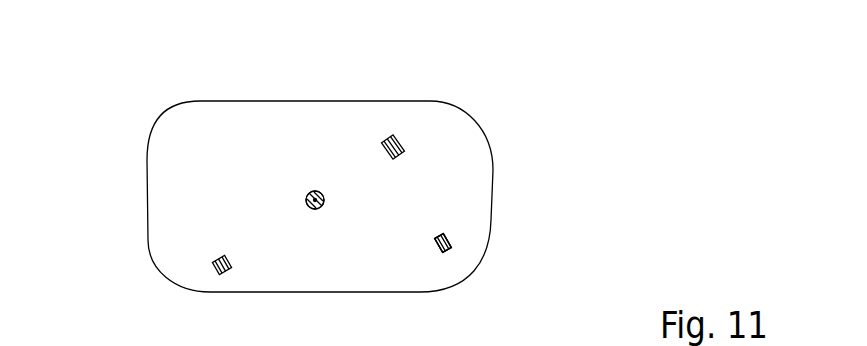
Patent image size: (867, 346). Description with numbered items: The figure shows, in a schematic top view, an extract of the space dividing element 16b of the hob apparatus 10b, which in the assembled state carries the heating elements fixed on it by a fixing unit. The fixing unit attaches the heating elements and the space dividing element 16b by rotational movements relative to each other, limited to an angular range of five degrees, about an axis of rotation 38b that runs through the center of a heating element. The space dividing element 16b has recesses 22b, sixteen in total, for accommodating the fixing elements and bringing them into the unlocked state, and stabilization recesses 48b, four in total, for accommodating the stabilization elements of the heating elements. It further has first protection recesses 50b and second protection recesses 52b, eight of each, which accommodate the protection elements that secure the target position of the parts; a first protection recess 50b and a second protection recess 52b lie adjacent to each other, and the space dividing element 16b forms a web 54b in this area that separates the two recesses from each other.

The hob apparatus 10b is at (540, 47).
The space dividing element 16b is at (331, 250).
The recess 22b is at (218, 269).
The axis of rotation 38b is at (311, 191).
The stabilization recess 48b is at (336, 180).
The first protection recess 50b is at (449, 254).
The second protection recess 52b is at (462, 243).
The web 54b is at (462, 261).